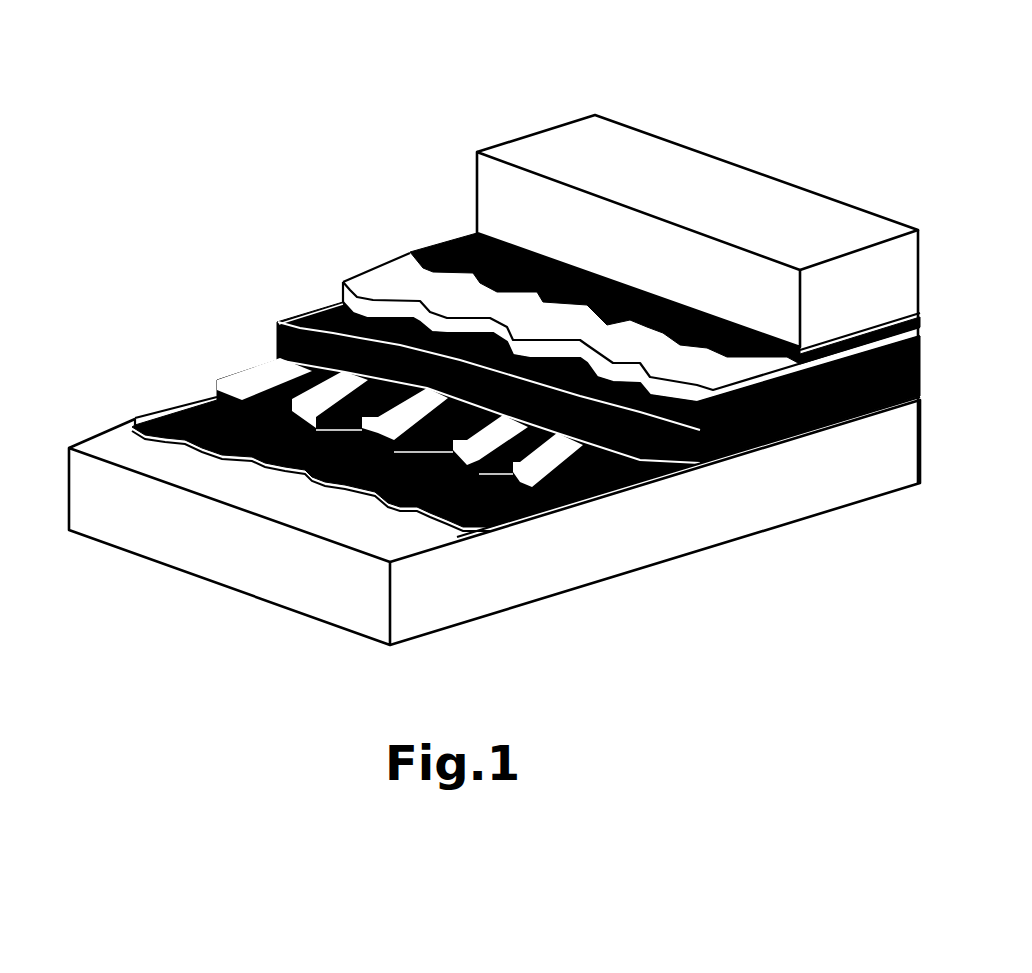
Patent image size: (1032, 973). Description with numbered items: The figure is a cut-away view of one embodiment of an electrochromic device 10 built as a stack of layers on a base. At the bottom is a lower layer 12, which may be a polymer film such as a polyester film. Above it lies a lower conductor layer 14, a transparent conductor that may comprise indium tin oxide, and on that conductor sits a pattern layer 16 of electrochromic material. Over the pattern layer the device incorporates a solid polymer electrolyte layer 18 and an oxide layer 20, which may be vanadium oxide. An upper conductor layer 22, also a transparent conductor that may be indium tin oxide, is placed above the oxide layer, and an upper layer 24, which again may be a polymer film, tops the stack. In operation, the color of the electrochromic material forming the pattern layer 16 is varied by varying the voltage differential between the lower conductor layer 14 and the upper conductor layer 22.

The electrochromic device 10 is at (307, 25).
The lower layer 12 is at (112, 440).
The lower conductor layer 14 is at (175, 402).
The pattern layer 16 is at (230, 370).
The solid polymer electrolyte layer 18 is at (293, 315).
The oxide layer 20 is at (356, 272).
The upper conductor layer 22 is at (427, 248).
The upper layer 24 is at (497, 146).